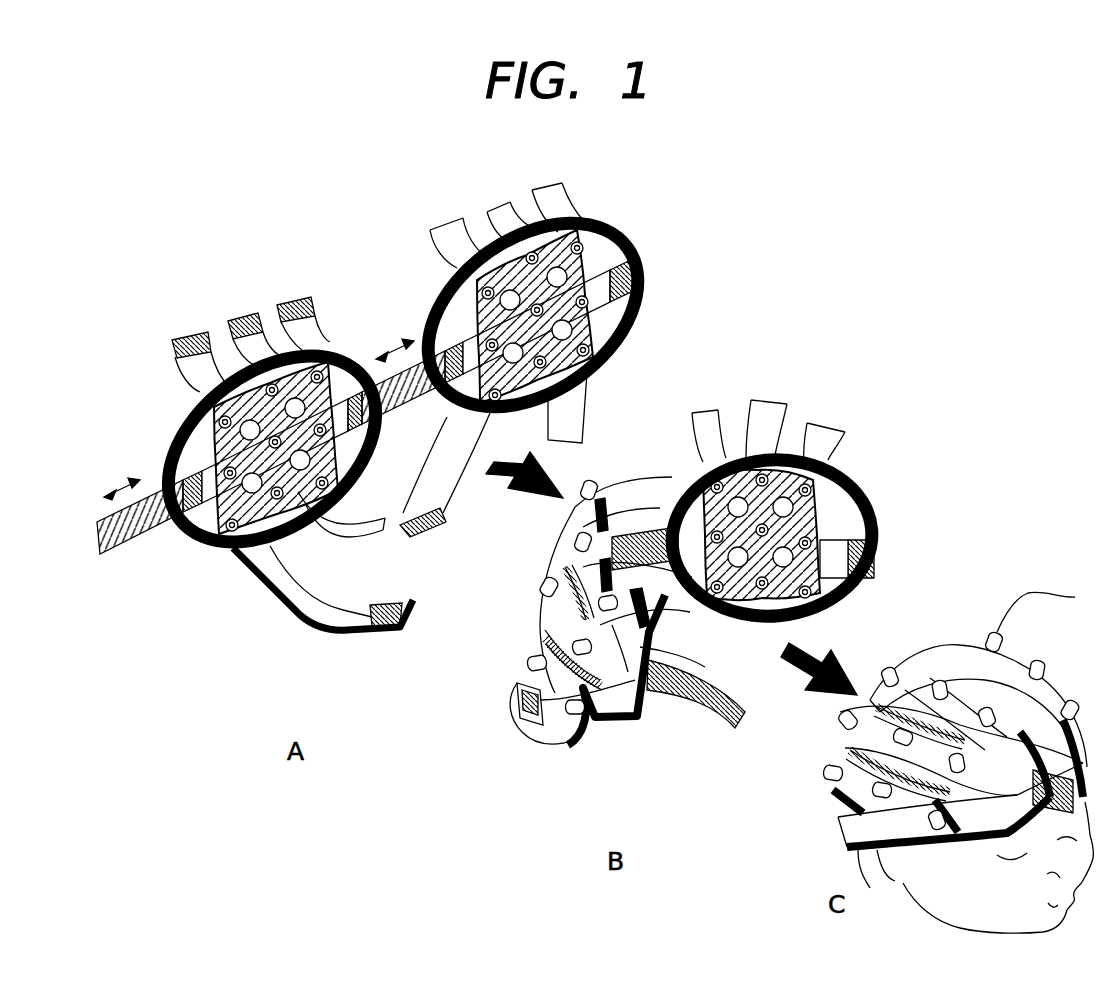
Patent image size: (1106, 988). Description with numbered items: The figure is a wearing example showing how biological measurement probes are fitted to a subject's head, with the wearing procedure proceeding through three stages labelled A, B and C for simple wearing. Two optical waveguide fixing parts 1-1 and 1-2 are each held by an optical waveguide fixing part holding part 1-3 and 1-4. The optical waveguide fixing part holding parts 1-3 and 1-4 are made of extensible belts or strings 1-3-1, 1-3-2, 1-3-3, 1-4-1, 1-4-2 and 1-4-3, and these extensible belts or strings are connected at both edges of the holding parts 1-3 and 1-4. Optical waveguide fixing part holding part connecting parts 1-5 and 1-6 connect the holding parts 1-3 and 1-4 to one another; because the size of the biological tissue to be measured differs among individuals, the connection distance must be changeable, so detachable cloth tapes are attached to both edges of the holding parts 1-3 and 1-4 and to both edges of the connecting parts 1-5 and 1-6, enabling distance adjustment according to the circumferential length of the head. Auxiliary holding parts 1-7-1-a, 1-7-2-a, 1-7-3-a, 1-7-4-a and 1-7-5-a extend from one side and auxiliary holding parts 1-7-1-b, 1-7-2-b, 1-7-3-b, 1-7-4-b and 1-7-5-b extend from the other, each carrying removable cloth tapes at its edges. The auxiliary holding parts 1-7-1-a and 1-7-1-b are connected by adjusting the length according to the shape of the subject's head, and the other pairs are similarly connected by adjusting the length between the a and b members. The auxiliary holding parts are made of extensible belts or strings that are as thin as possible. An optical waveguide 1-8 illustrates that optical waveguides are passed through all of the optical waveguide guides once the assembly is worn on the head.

The optical waveguide fixing part 1-1 is at (175, 420).
The optical waveguide fixing part 1-2 is at (635, 248).
The optical waveguide fixing part holding part 1-3 is at (195, 455).
The optical waveguide fixing part holding part 1-4 is at (618, 338).
The optical waveguide fixing part holding part connecting part 1-5 is at (405, 420).
The optical waveguide fixing part holding part connecting part 1-6 is at (139, 537).
The auxiliary holding part 1-7-1-a is at (332, 632).
The auxiliary holding part 1-7-1-b is at (580, 417).
The auxiliary holding part 1-7-2-a is at (460, 510).
The auxiliary holding part 1-7-2-b is at (352, 535).
The auxiliary holding part 1-7-3-a is at (185, 355).
The auxiliary holding part 1-7-3-b is at (527, 188).
The auxiliary holding part 1-7-4-a is at (245, 327).
The auxiliary holding part 1-7-4-b is at (470, 207).
The auxiliary holding part 1-7-5-a is at (293, 293).
The auxiliary holding part 1-7-5-b is at (432, 240).
The extensible belt or string 1-4-1 is at (840, 500).
The extensible belt or string 1-4-2 is at (835, 545).
The extensible belt or string 1-4-3 is at (840, 595).
The extensible belt or string 1-3-1 is at (663, 693).
The extensible belt or string 1-3-2 is at (638, 733).
The extensible belt or string 1-3-3 is at (607, 725).
The optical waveguide 1-8 is at (1043, 590).